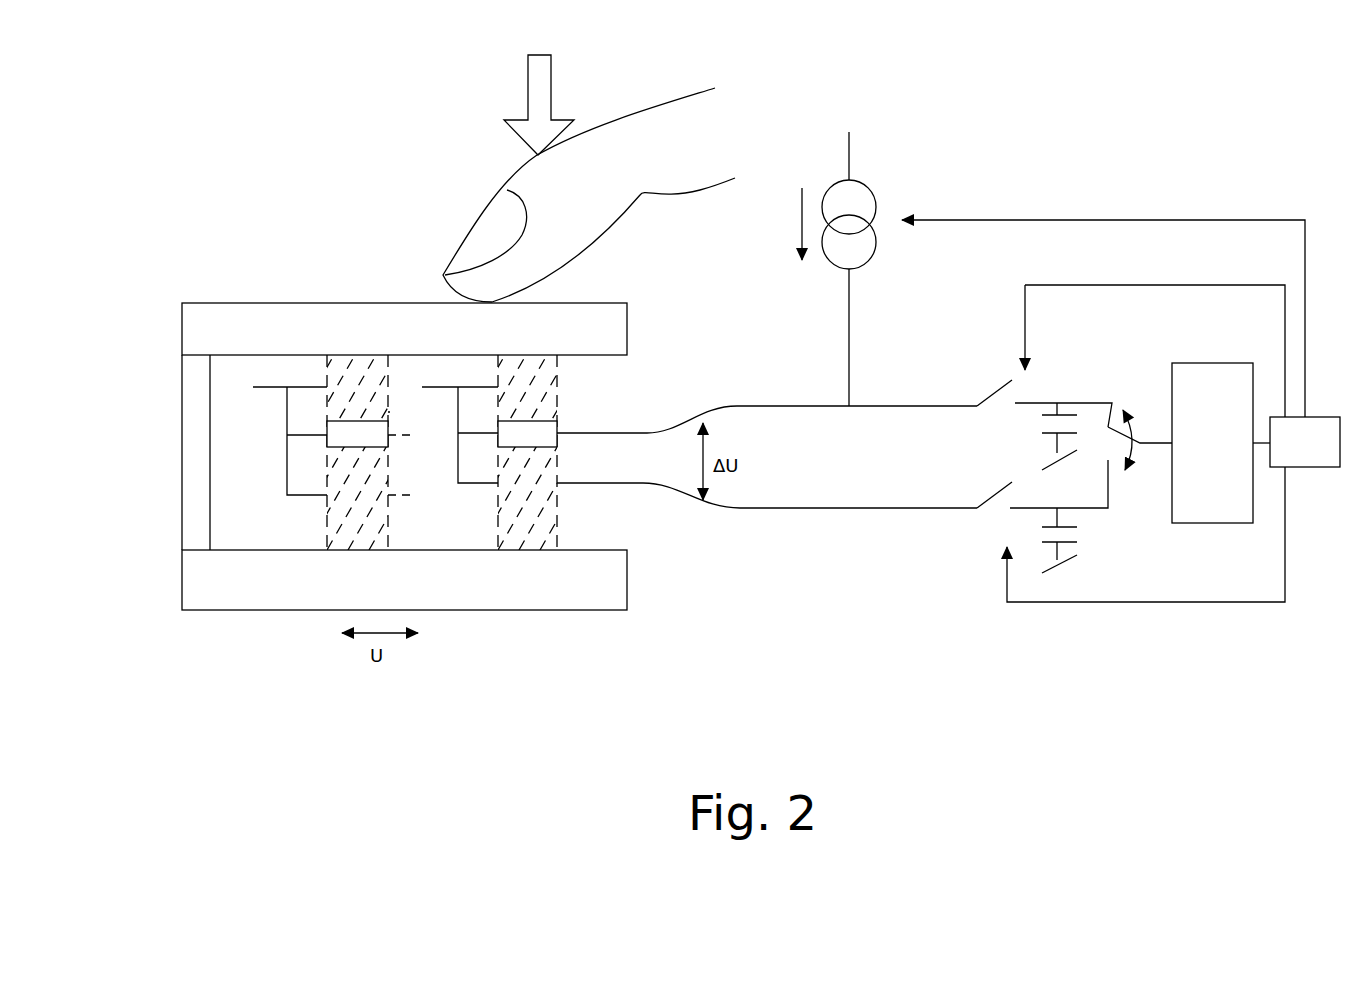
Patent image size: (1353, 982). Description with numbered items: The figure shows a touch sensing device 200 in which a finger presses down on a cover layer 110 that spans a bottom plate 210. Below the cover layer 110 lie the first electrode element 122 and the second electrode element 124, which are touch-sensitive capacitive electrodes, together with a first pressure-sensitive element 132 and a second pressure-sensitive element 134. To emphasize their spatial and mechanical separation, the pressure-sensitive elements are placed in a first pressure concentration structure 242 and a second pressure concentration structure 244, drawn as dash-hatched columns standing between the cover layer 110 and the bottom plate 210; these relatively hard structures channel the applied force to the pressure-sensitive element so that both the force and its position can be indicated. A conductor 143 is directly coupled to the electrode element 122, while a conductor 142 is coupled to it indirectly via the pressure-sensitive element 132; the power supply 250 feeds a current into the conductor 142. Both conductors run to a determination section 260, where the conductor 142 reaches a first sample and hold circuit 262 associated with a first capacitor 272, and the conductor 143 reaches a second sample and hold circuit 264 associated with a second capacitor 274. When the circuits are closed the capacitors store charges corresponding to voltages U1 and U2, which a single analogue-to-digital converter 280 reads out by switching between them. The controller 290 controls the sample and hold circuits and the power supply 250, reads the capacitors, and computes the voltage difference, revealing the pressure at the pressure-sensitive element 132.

The cover layer 110 is at (612, 300).
The first electrode element 122 is at (420, 375).
The second electrode element 124 is at (262, 398).
The first pressure-sensitive element 132 is at (540, 422).
The second pressure-sensitive element 134 is at (390, 412).
The conductor 142 is at (760, 405).
The conductor 143 is at (750, 508).
The touch sensing device 200 is at (800, 107).
The bottom plate 210 is at (563, 609).
The first pressure concentration structure 242 is at (498, 533).
The second pressure concentration structure 244 is at (328, 507).
The power supply 250 is at (862, 180).
The determination section 260 is at (912, 608).
The first sample and hold circuit 262 is at (992, 370).
The second sample and hold circuit 264 is at (980, 525).
The first capacitor 272 is at (1077, 412).
The second capacitor 274 is at (1090, 530).
The analogue-to-digital converter 280 is at (1207, 525).
The controller 290 is at (1315, 467).